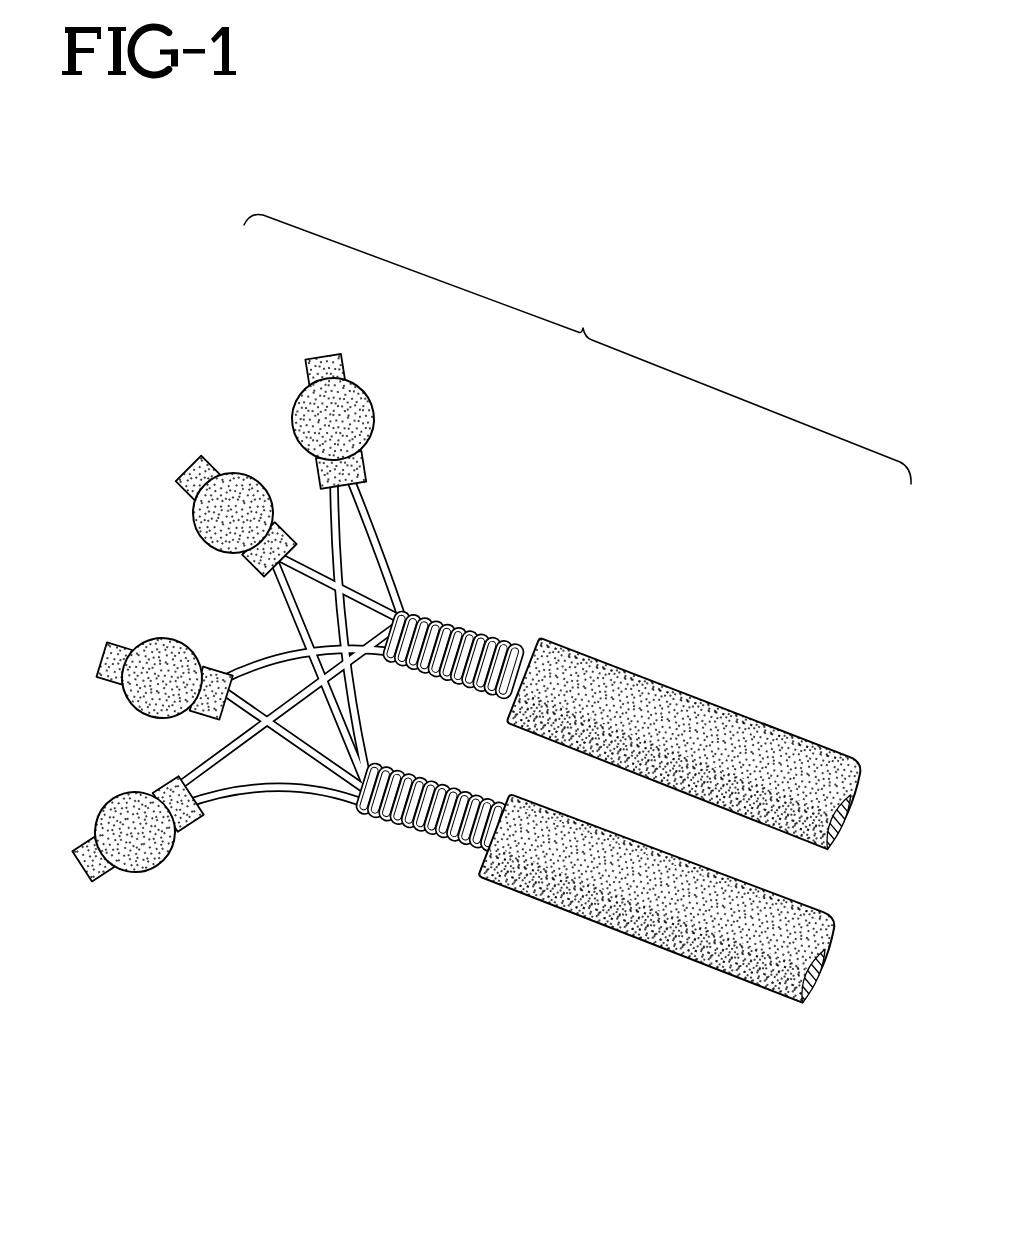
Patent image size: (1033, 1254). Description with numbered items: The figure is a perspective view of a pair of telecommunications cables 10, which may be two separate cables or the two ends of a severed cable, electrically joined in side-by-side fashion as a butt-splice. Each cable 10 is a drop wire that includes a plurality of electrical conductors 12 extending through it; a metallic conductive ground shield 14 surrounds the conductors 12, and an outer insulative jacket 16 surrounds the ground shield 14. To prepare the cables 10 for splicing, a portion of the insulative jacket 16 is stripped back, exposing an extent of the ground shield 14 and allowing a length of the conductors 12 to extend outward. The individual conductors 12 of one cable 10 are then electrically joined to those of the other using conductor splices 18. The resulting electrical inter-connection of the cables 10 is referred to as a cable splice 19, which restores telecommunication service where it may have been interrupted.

The telecommunications cable 10 is at (473, 720).
The electrical conductor 12 is at (333, 517).
The ground shield 14 is at (467, 618).
The outer insulative jacket 16 is at (660, 700).
The conductor splice 18 is at (338, 419).
The cable splice 19 is at (577, 349).